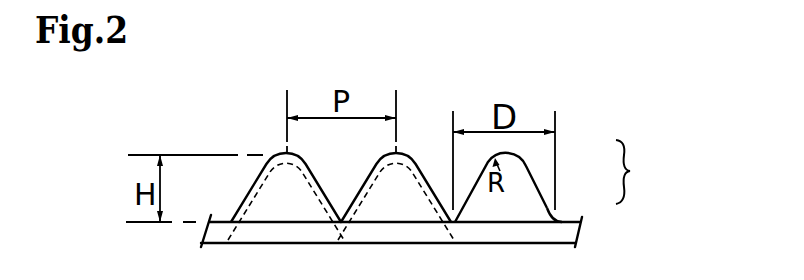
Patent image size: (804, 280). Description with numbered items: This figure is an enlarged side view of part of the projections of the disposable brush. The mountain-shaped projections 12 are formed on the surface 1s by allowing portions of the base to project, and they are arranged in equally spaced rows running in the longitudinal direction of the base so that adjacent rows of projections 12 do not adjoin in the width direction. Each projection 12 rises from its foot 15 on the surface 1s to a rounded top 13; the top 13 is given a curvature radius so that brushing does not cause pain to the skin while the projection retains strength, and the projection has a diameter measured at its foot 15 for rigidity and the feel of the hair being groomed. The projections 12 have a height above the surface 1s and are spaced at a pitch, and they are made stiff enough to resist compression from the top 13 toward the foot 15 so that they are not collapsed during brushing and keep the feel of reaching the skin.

The surface 1s is at (582, 220).
The projections 12 is at (641, 172).
The top 13 is at (514, 152).
The foot 15 is at (547, 207).